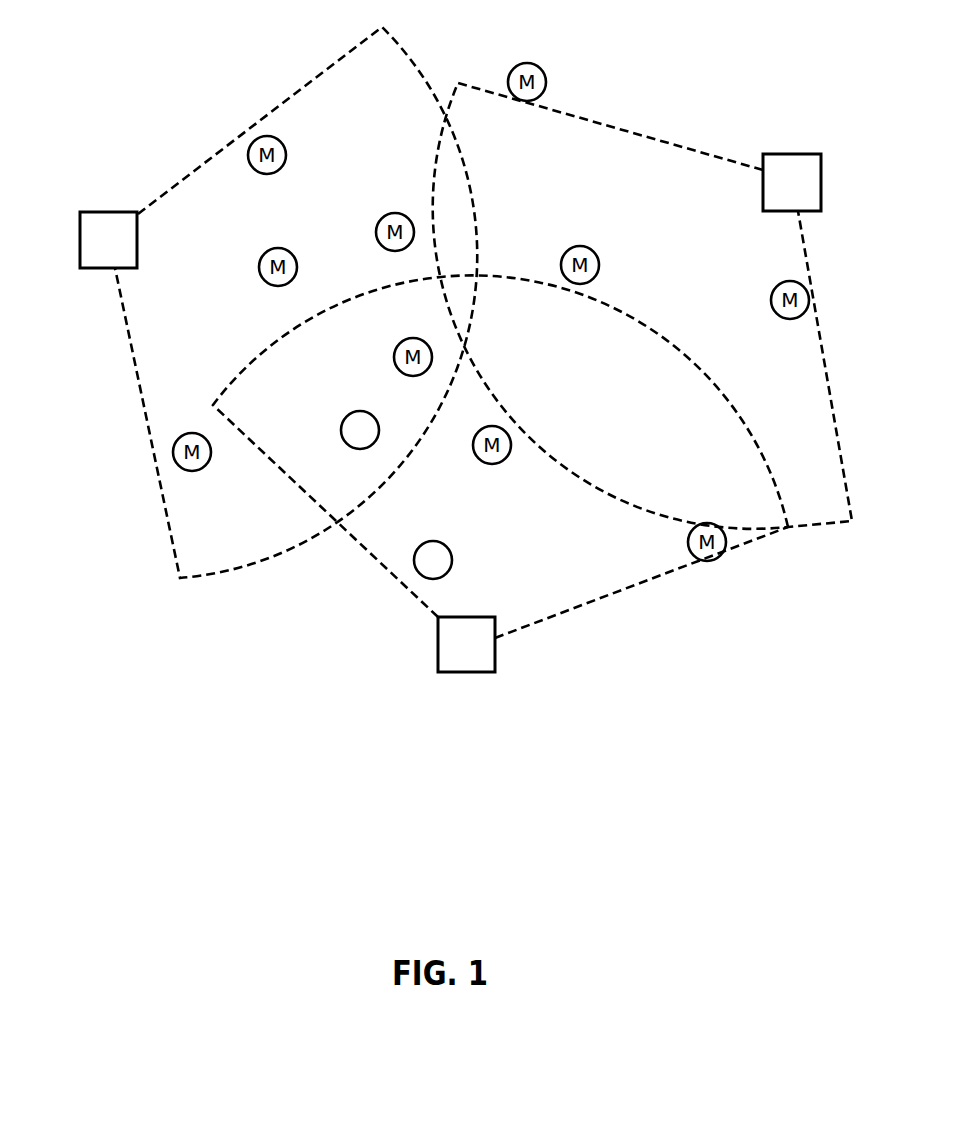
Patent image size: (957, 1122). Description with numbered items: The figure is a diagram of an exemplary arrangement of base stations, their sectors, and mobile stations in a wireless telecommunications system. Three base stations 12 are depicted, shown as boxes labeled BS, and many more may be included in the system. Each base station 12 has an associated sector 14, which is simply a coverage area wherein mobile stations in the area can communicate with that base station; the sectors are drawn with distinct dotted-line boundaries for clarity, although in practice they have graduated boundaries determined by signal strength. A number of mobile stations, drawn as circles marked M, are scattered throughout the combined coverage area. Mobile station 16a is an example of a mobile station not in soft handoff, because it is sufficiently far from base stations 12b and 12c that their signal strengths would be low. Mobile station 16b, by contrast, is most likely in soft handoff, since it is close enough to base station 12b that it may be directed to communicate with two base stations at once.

The base station 12 is at (495, 655).
The base station 12b is at (80, 240).
The base station 12c is at (821, 175).
The sector 14 is at (612, 592).
The mobile station 16a is at (414, 562).
The mobile station 16b is at (341, 421).